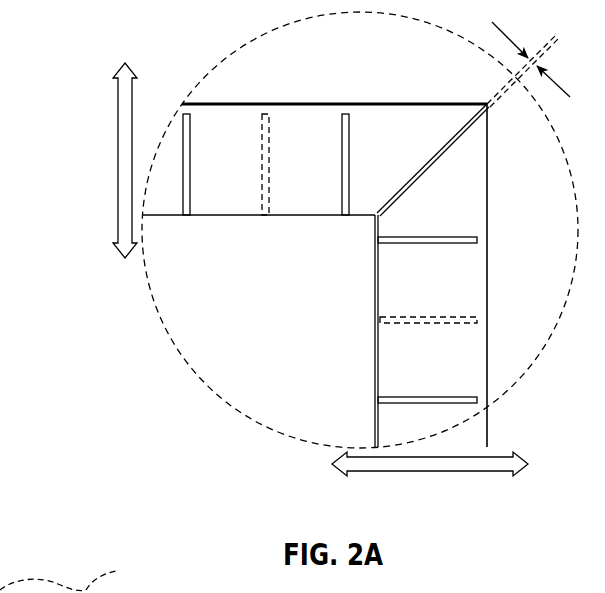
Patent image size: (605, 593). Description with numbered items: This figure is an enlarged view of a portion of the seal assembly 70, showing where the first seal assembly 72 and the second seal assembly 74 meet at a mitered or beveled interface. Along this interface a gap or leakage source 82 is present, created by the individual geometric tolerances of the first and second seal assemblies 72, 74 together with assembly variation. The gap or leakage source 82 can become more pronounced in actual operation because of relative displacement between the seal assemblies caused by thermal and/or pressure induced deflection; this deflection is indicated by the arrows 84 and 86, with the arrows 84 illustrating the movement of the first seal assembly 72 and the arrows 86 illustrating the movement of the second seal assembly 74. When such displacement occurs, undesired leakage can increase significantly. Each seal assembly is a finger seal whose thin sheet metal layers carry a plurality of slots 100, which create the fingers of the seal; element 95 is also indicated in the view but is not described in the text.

The seal assembly 70 is at (108, 578).
The first seal assembly 72 is at (300, 126).
The second seal assembly 74 is at (455, 275).
The gap or leakage source 82 is at (553, 78).
The arrows illustrating movement of first seal assembly 84 is at (115, 196).
The arrows illustrating movement of second seal assembly 86 is at (458, 479).
The support element 95 is at (48, 590).
The slots 100 is at (347, 112).